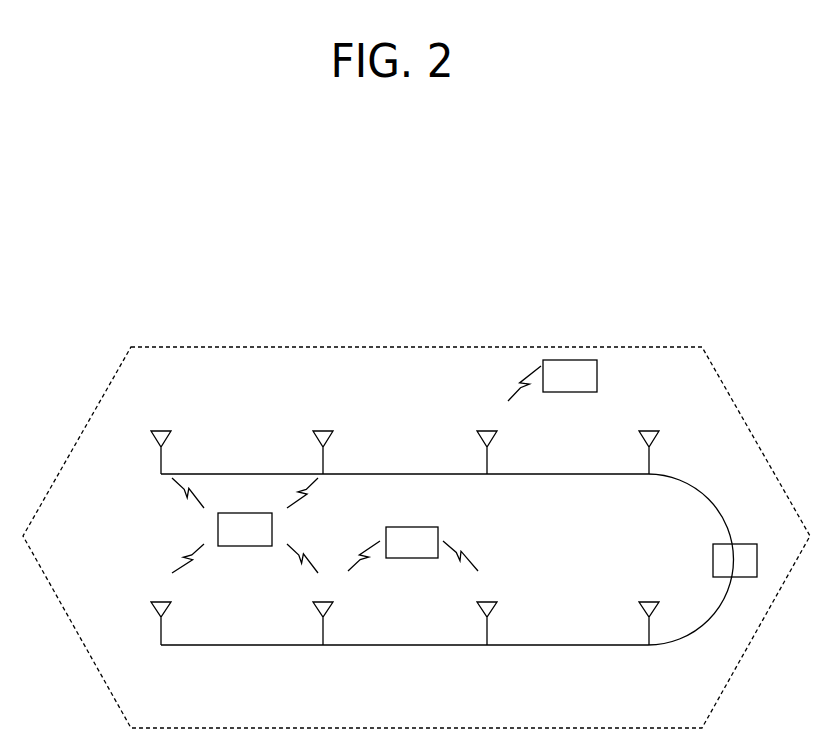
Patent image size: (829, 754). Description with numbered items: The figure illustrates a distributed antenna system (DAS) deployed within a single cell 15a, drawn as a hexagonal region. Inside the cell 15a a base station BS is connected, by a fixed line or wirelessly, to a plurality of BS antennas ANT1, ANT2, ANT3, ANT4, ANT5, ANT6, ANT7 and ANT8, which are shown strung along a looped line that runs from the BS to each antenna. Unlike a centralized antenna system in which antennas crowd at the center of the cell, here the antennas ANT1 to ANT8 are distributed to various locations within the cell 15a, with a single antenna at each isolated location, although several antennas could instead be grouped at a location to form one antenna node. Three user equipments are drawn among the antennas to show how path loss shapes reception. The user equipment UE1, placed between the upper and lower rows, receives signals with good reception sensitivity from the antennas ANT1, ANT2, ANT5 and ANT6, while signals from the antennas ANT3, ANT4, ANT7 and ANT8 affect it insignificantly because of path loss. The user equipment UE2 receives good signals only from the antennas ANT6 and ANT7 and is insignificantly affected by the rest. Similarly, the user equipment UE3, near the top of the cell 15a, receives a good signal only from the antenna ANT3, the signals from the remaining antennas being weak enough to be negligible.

The cell 15a is at (491, 347).
The BS antenna ANT1 is at (162, 439).
The BS antenna ANT2 is at (325, 439).
The BS antenna ANT3 is at (489, 439).
The BS antenna ANT4 is at (652, 439).
The BS antenna ANT5 is at (162, 610).
The BS antenna ANT6 is at (325, 610).
The BS antenna ANT7 is at (489, 610).
The BS antenna ANT8 is at (652, 610).
The user equipment UE1 is at (245, 525).
The user equipment UE2 is at (413, 549).
The user equipment UE3 is at (552, 380).
The base station BS is at (735, 561).